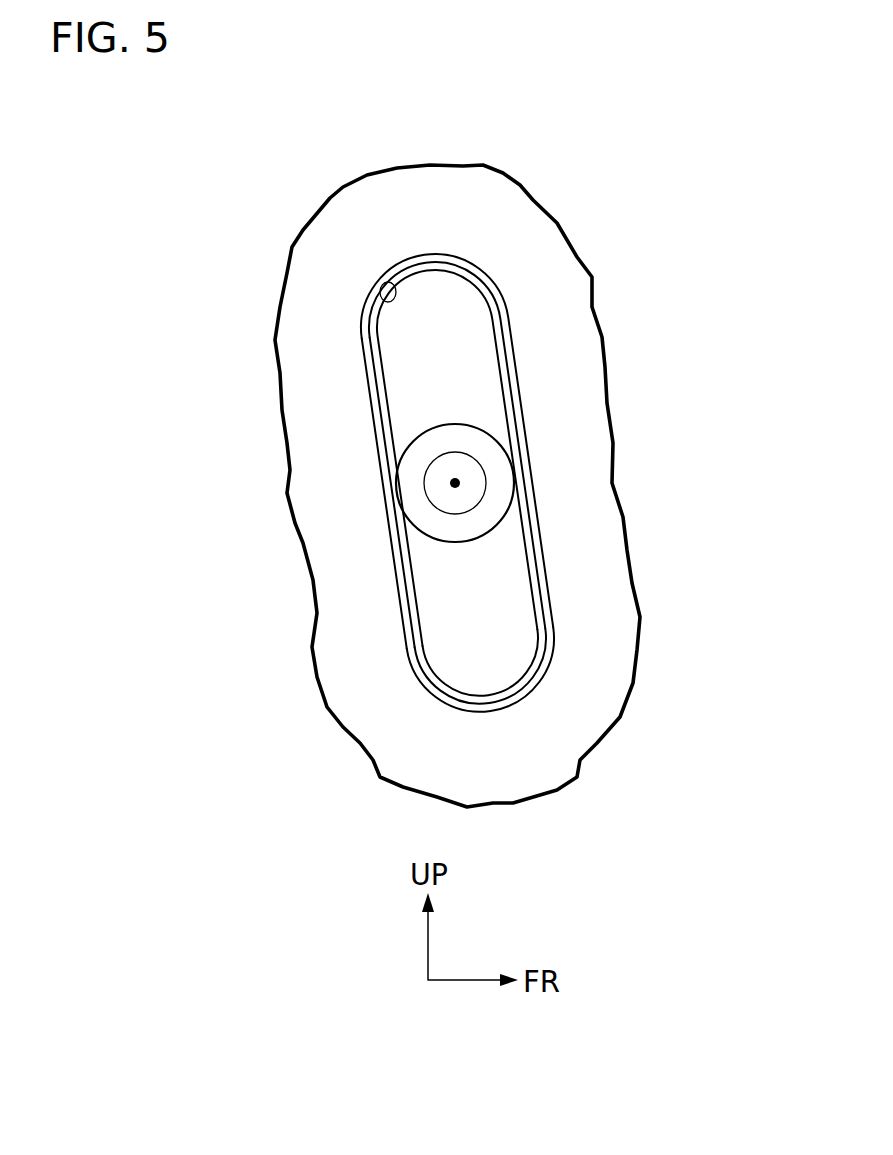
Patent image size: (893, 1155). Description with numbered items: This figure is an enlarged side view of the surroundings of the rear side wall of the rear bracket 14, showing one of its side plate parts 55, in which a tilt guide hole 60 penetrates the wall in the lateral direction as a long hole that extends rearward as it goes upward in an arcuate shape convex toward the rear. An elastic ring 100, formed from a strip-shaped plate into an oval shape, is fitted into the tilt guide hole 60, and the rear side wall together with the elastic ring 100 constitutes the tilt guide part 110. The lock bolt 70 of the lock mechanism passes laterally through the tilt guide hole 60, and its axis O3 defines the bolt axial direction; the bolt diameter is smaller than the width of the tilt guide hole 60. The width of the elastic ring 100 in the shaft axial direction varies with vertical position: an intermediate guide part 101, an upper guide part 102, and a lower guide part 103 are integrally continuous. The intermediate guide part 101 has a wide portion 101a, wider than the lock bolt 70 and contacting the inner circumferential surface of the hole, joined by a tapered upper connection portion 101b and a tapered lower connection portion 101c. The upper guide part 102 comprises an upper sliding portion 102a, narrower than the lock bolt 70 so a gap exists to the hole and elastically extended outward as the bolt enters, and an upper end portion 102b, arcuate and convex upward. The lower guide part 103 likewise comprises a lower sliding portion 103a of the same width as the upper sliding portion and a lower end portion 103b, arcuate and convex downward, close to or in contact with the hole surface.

The rear bracket 14 is at (512, 176).
The side plate part 55 is at (448, 198).
The tilt guide hole 60 is at (380, 300).
The lock bolt 70 is at (465, 475).
The elastic ring 100 is at (452, 468).
The intermediate guide part 101 is at (313, 474).
The wide portion 101a is at (387, 493).
The upper connection portion 101b is at (380, 418).
The lower connection portion 101c is at (398, 560).
The upper guide part 102 is at (574, 422).
The upper sliding portion 102a is at (673, 231).
The upper end portion 102b is at (461, 262).
The lower guide part 103 is at (353, 703).
The lower sliding portion 103a is at (403, 623).
The lower end portion 103b is at (457, 708).
The tilt guide part 110 is at (535, 392).
The axis of the lock bolt O3 is at (460, 484).